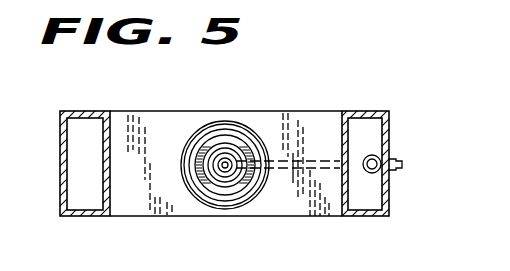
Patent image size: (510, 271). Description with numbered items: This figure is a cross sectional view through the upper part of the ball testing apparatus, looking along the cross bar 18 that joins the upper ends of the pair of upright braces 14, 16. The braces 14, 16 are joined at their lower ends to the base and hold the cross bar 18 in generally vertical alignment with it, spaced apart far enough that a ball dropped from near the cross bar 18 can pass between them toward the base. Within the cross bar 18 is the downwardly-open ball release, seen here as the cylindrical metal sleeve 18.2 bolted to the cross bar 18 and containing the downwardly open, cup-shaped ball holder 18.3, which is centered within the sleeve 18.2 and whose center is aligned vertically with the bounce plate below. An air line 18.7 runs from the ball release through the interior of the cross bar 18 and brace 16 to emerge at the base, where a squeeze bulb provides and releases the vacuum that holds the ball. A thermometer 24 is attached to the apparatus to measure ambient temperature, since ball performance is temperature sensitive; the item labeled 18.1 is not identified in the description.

The upright brace 14 is at (110, 122).
The upright brace 16 is at (342, 133).
The cross bar 18 is at (277, 111).
The outer ring of body 18.1 is at (203, 203).
The cylindrical metal sleeve 18.2 is at (230, 202).
The ball holder 18.3 is at (243, 192).
The air line 18.7 is at (377, 154).
The thermometer 24 is at (403, 164).